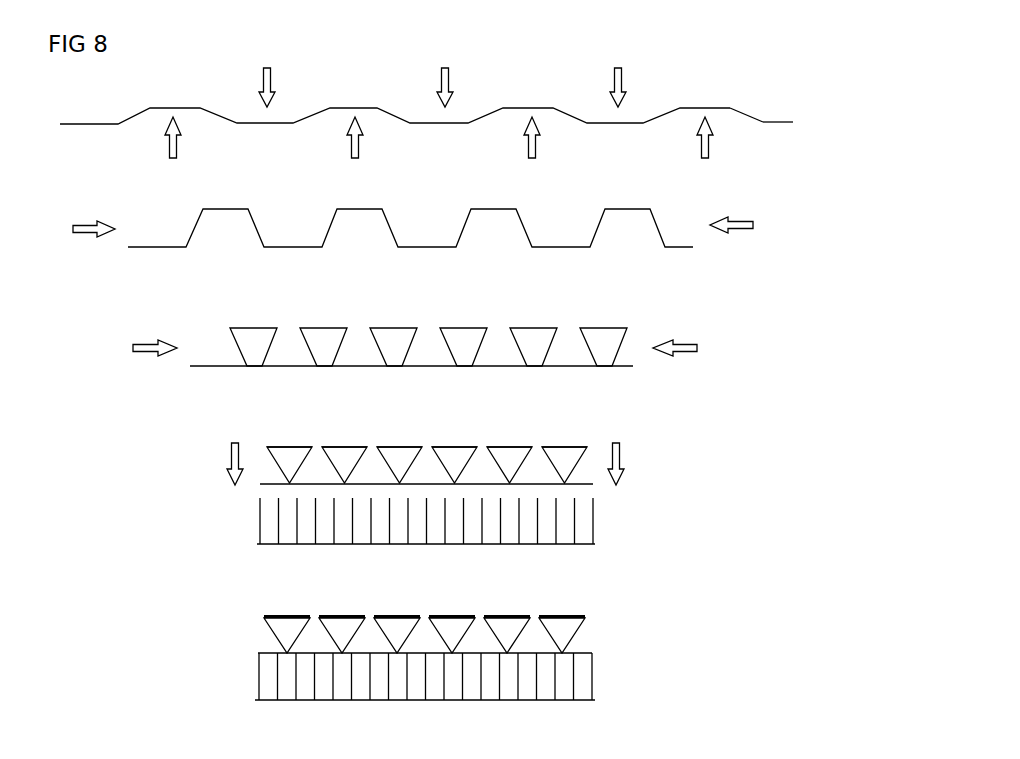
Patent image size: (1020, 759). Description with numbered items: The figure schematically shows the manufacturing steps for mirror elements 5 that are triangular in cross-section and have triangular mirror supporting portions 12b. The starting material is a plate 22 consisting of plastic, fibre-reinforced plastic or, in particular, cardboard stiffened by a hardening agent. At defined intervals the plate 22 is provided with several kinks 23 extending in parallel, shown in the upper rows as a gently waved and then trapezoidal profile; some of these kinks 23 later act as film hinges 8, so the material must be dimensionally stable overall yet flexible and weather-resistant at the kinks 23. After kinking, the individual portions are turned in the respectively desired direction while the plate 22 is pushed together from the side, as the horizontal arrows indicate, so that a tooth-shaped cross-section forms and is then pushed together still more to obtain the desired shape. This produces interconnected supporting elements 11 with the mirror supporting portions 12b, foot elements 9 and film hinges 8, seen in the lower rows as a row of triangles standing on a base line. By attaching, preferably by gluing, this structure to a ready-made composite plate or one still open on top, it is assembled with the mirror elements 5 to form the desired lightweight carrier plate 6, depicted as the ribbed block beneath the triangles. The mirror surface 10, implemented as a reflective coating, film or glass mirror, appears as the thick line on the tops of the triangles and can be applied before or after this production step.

The mirror element 5 is at (460, 583).
The lightweight carrier plate 6 is at (565, 528).
The film hinge 8 is at (285, 652).
The foot element 9 is at (317, 485).
The mirror surface 10 is at (568, 615).
The supporting element 11 is at (567, 442).
The triangular mirror supporting portion 12b is at (498, 447).
The plate 22 is at (787, 124).
The kink 23 is at (730, 108).